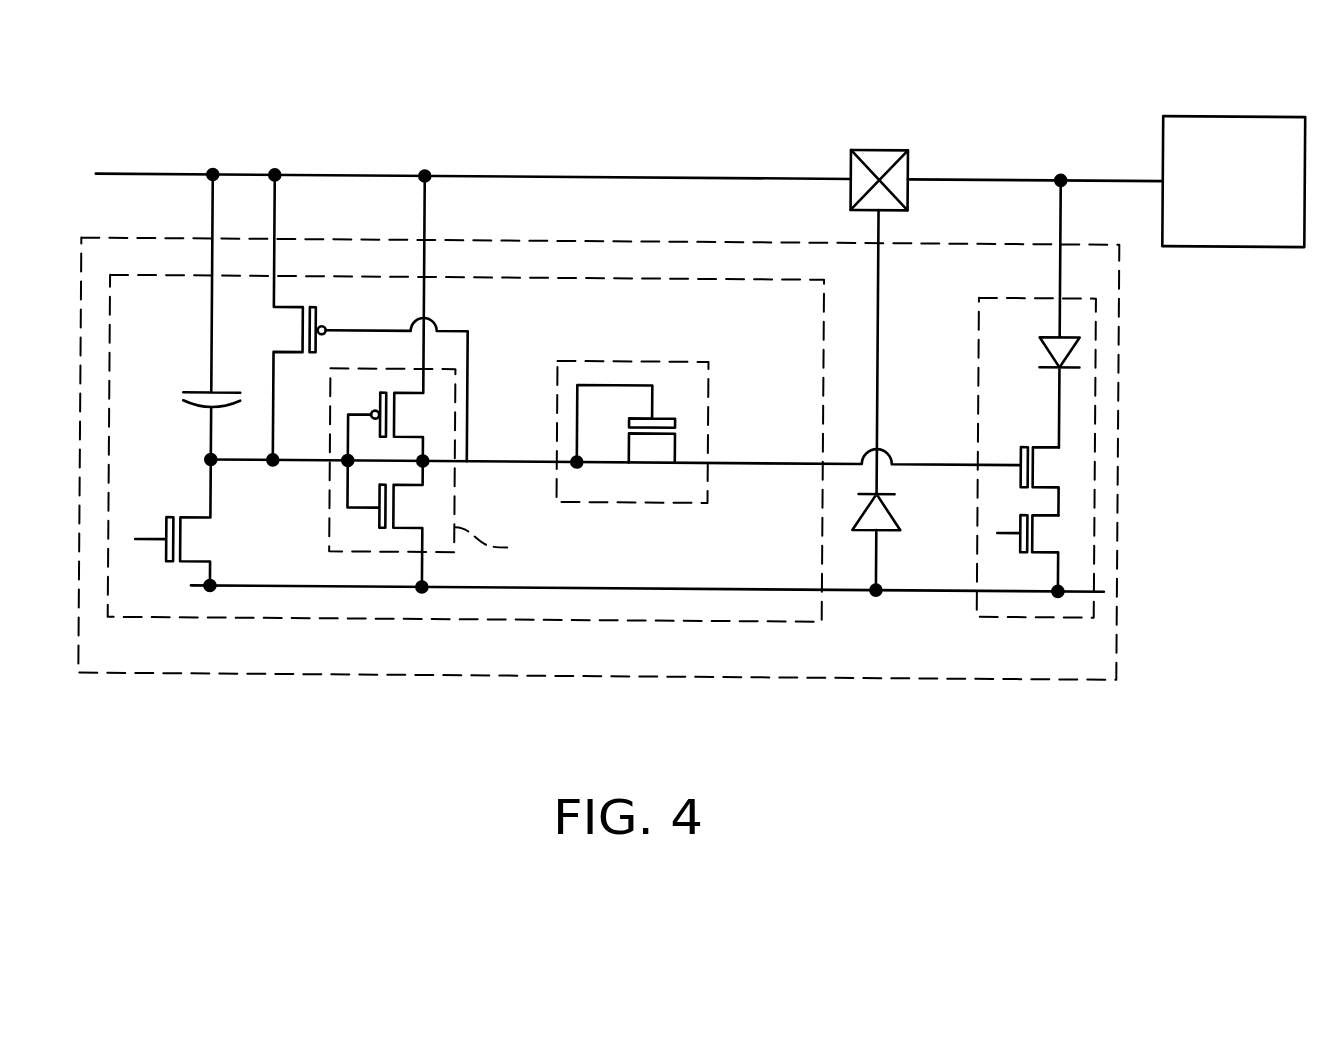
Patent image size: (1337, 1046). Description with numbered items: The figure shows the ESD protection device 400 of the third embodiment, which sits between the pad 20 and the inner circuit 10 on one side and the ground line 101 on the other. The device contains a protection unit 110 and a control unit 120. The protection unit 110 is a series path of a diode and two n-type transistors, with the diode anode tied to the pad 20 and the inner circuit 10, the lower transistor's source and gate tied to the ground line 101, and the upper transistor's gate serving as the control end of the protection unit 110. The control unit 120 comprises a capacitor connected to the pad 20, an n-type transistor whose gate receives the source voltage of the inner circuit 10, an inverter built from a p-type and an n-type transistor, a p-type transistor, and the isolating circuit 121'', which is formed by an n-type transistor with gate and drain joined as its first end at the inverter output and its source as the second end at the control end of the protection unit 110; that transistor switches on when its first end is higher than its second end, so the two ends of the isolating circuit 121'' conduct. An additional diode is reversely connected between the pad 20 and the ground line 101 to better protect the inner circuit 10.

The inner circuit 10 is at (1234, 238).
The pad 20 is at (881, 144).
The ground line 101 is at (857, 587).
The protection unit 110 is at (1009, 610).
The control unit 120 is at (749, 616).
The isolating circuit 121'' is at (668, 465).
The ESD protection device 400 is at (1124, 512).